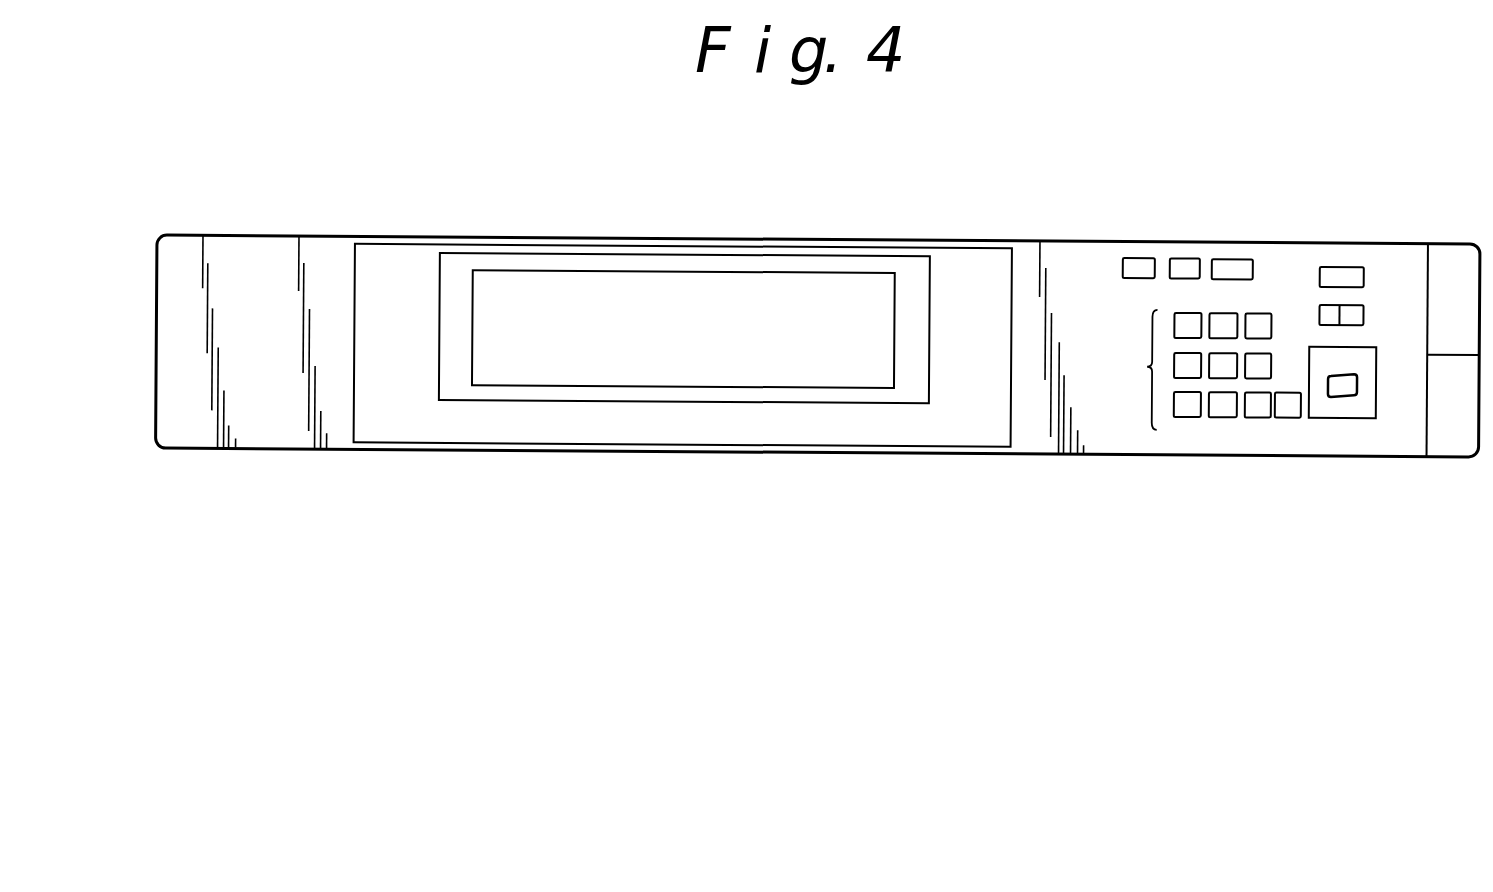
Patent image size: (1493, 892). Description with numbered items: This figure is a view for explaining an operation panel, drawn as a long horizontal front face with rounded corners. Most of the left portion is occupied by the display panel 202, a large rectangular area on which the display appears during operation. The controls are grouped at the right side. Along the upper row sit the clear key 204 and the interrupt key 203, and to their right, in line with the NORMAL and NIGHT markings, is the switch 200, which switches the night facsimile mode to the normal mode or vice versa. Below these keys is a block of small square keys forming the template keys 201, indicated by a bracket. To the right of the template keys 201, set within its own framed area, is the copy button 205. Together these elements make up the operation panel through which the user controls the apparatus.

The switch 200 is at (1355, 317).
The template keys 201 is at (1149, 367).
The display panel 202 is at (637, 292).
The interrupt key 203 is at (1238, 270).
The clear key 204 is at (1193, 270).
The copy button 205 is at (1345, 408).